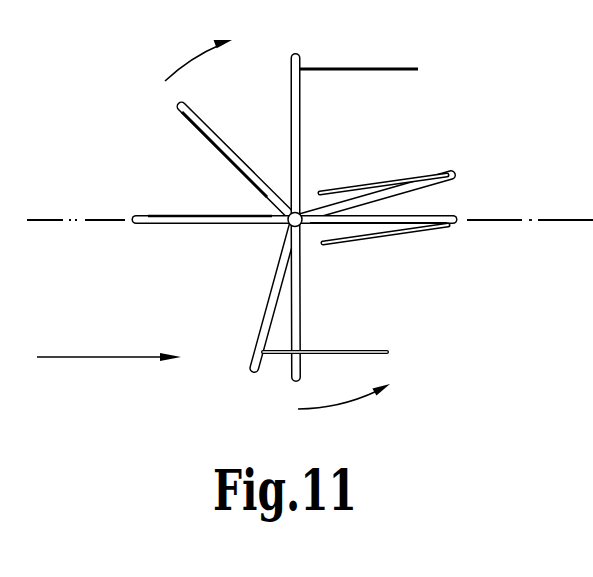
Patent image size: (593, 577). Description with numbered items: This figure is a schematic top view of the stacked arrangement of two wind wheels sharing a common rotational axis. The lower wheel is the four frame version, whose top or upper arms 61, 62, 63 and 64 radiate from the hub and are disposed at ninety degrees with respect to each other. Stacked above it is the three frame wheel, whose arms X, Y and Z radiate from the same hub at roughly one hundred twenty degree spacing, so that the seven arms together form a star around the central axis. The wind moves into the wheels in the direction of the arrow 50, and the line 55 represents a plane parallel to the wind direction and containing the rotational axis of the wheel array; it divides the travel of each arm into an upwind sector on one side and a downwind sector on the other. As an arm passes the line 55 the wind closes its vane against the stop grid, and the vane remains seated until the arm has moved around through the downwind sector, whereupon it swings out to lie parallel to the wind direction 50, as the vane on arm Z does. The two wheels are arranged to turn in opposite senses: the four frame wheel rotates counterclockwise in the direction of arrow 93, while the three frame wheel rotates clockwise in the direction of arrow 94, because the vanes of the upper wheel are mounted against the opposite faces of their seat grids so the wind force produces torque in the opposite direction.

The wind direction arrow 50 is at (87, 358).
The line parallel to wind direction 55 is at (44, 218).
The upper arm 61 is at (300, 130).
The upper arm 62 is at (301, 288).
The upper arm 63 is at (459, 220).
The upper arm 64 is at (177, 224).
The counterclockwise rotation arrow 93 is at (350, 402).
The clockwise rotation arrow 94 is at (198, 55).
The arm X is at (454, 172).
The arm Y is at (262, 324).
The arm Z is at (222, 141).